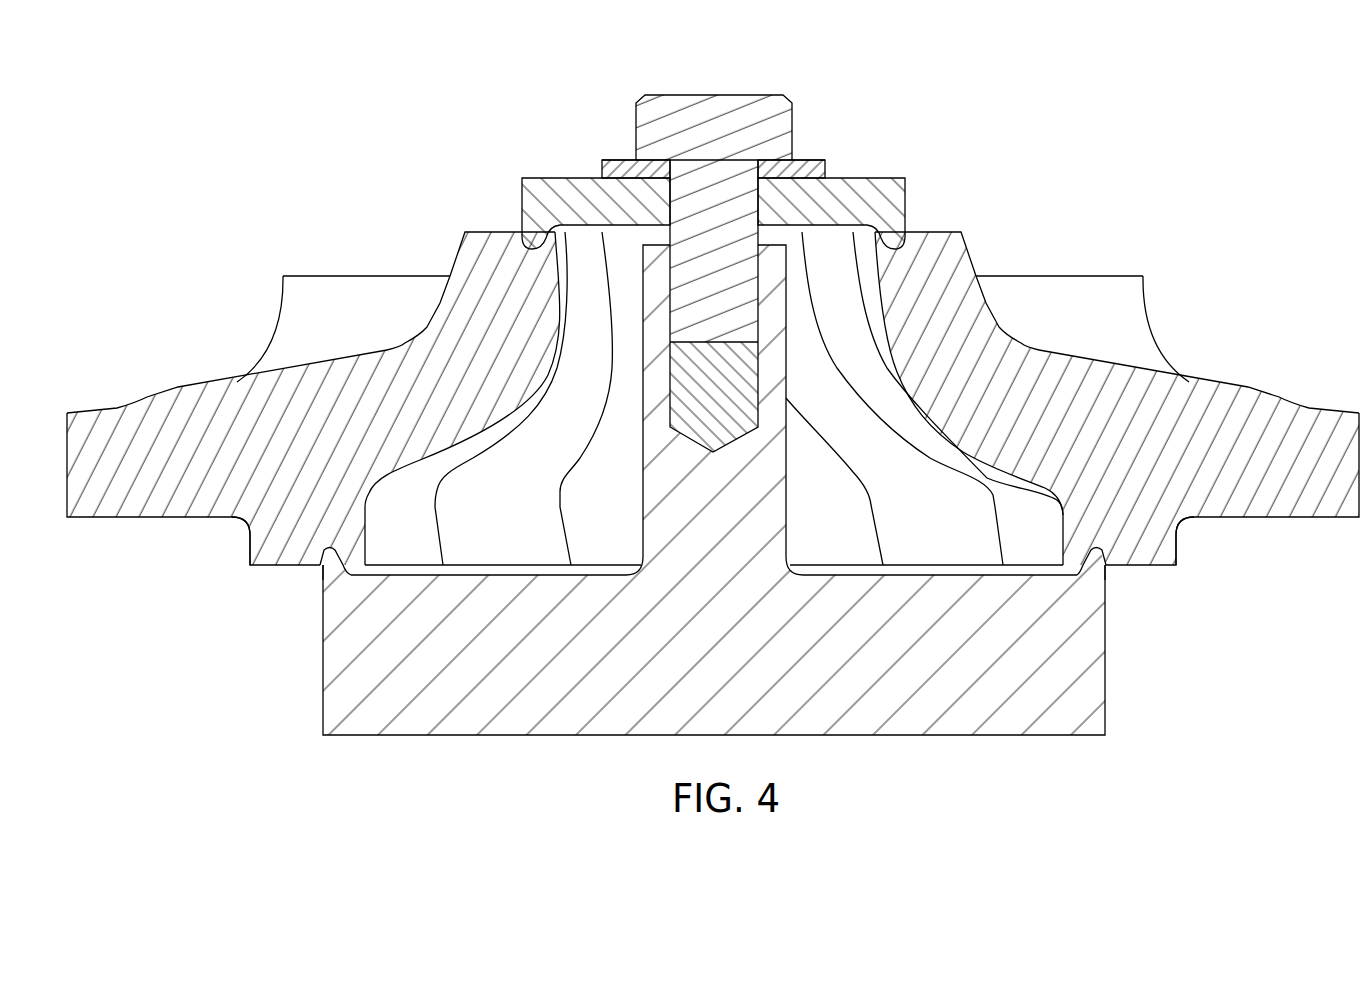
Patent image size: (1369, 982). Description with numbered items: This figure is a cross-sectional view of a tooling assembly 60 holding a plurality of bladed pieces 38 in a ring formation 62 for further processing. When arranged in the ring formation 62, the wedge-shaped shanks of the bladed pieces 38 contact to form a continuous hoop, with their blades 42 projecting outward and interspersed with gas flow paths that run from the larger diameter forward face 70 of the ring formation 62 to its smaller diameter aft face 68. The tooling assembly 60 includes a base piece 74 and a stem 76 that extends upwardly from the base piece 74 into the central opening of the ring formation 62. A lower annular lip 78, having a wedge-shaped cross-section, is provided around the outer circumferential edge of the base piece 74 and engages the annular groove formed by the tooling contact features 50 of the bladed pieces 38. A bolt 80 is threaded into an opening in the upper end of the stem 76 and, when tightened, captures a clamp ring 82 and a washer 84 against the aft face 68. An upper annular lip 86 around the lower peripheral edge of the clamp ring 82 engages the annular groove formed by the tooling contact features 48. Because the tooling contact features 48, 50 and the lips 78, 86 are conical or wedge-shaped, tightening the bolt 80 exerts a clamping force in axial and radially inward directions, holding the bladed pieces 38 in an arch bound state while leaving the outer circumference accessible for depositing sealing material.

The bladed piece 38 is at (118, 409).
The blade 42 is at (125, 478).
The tooling contact feature 48 is at (527, 241).
The tooling contact feature 50 is at (322, 563).
The tooling assembly 60 is at (714, 164).
The ring formation 62 is at (295, 275).
The aft face 68 is at (468, 232).
The forward face 70 is at (250, 566).
The base piece 74 is at (733, 499).
The stem 76 is at (786, 497).
The lower annular lip 78 is at (330, 573).
The bolt 80 is at (738, 95).
The clamp ring 82 is at (543, 178).
The washer 84 is at (816, 160).
The upper annular lip 86 is at (537, 237).